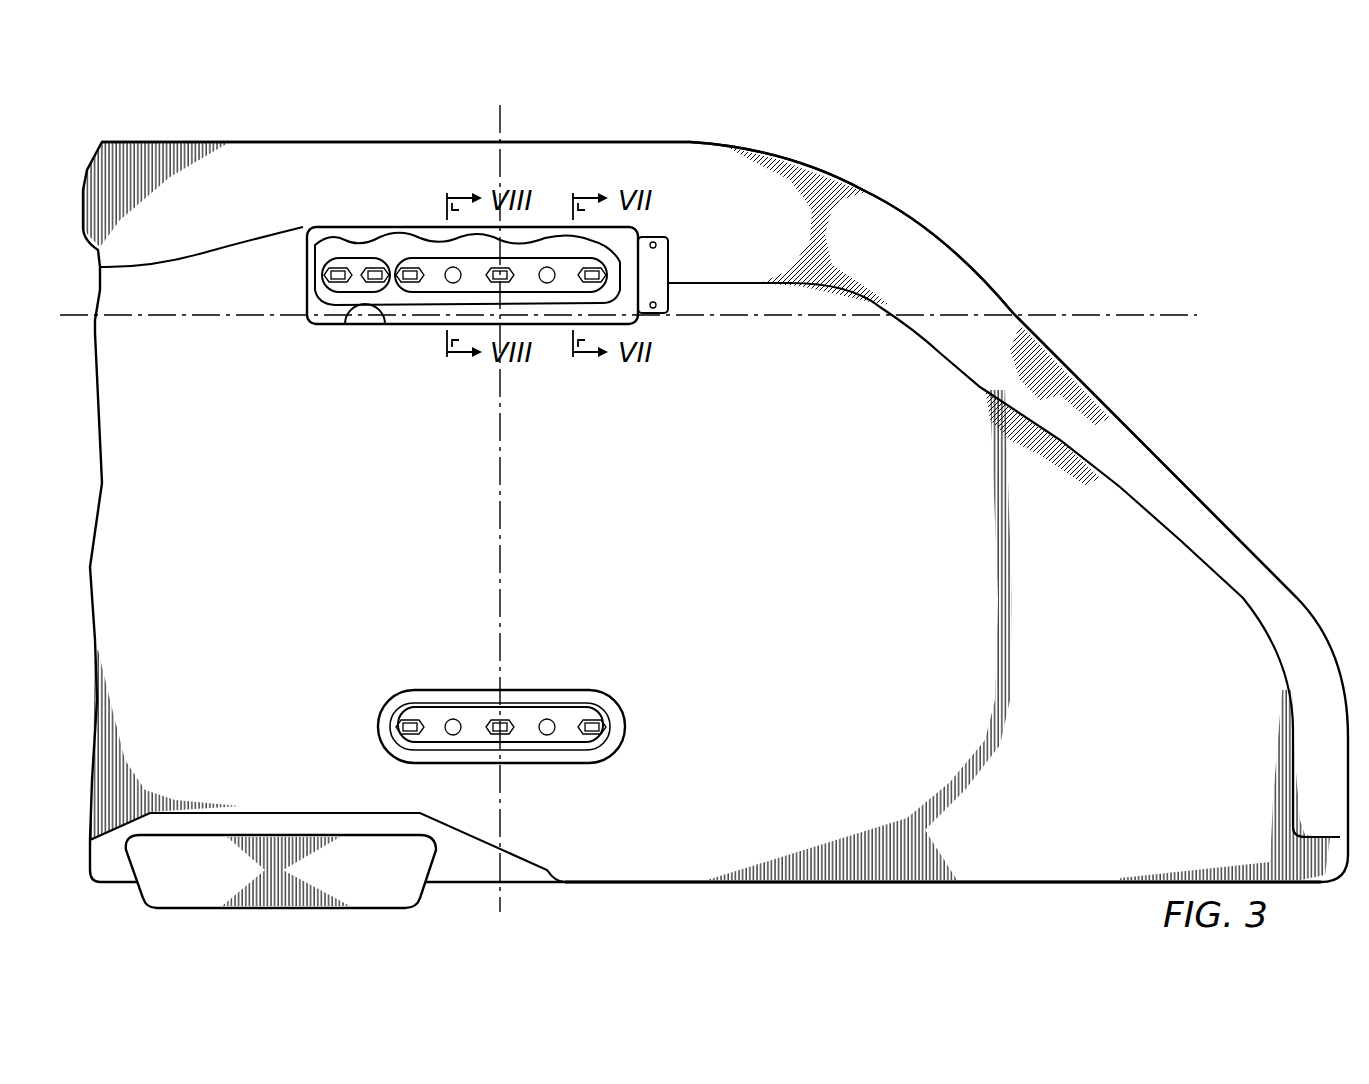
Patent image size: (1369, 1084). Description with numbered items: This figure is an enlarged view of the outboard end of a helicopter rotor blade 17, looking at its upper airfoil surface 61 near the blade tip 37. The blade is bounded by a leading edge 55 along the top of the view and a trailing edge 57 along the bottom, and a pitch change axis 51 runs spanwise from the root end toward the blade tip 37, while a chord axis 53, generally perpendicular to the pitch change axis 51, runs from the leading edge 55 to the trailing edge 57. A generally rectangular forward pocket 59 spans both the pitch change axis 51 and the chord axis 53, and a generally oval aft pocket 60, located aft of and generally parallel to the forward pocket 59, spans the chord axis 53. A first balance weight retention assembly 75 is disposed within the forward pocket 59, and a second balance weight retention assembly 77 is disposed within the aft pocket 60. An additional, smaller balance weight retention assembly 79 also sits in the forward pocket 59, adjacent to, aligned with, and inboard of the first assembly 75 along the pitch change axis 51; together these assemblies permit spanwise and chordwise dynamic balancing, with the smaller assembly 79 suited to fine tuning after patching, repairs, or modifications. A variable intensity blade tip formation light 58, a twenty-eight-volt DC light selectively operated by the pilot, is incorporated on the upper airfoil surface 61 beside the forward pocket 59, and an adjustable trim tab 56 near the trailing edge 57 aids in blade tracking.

The rotor blade 17 is at (178, 120).
The blade tip 37 is at (1002, 246).
The pitch change axis 51 is at (1128, 314).
The chord axis 53 is at (501, 483).
The leading edge 55 is at (345, 141).
The adjustable trim tab 56 is at (139, 897).
The trailing edge 57 is at (866, 884).
The variable intensity blade tip formation light 58 is at (660, 262).
The forward pocket 59 is at (345, 323).
The aft pocket 60 is at (558, 698).
The upper airfoil surface 61 is at (1026, 848).
The first balance weight retention assembly 75 is at (416, 248).
The second balance weight retention assembly 77 is at (586, 702).
The additional balance weight retention assembly 79 is at (357, 248).